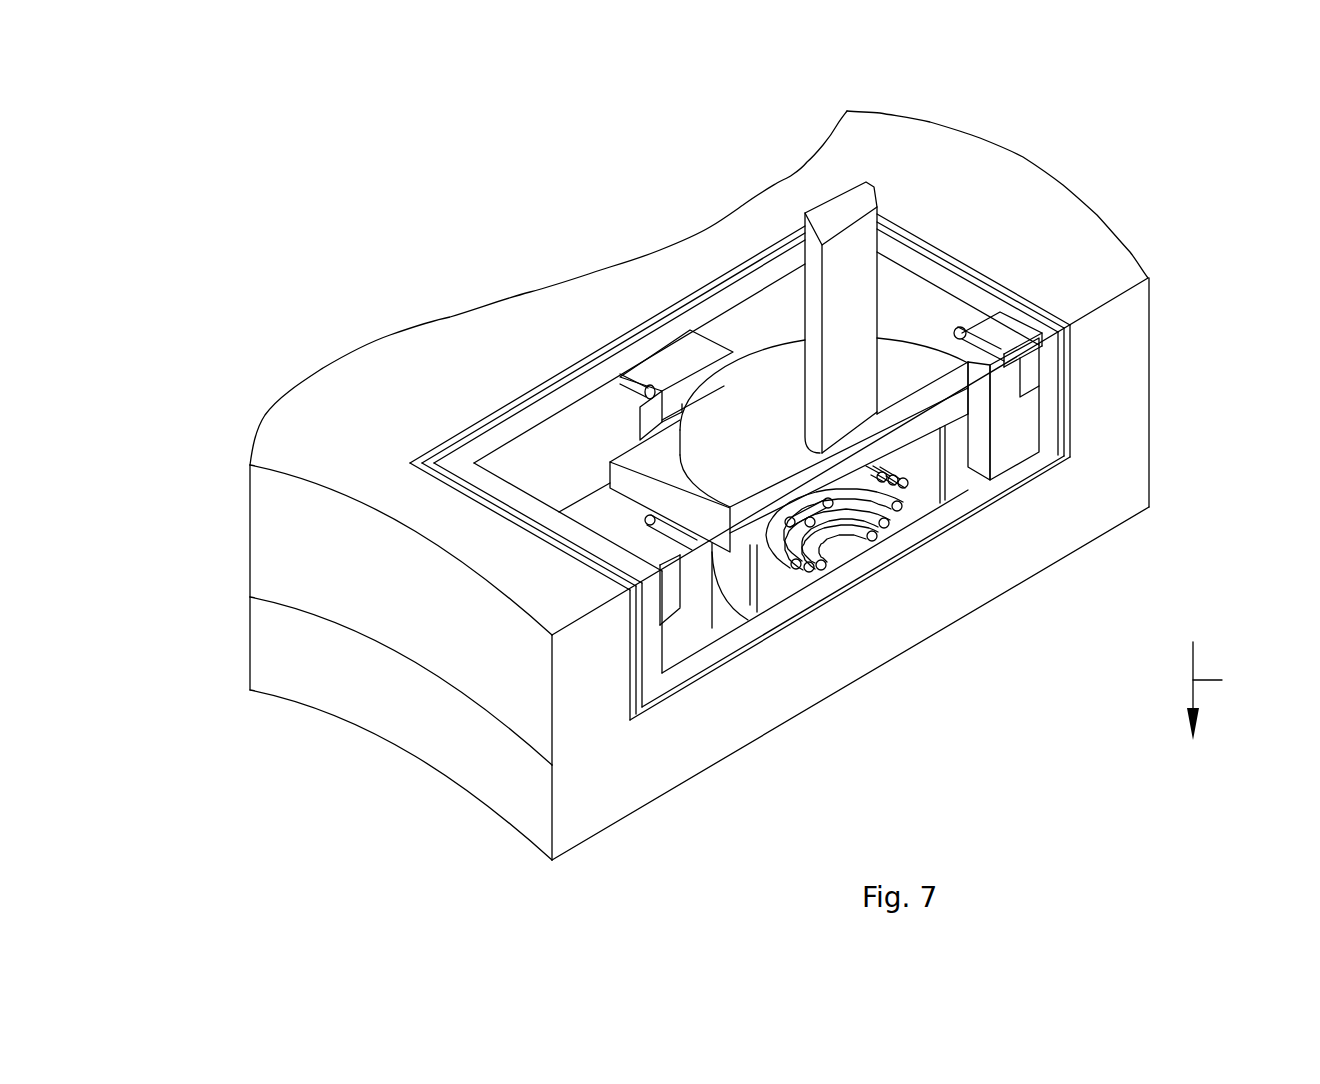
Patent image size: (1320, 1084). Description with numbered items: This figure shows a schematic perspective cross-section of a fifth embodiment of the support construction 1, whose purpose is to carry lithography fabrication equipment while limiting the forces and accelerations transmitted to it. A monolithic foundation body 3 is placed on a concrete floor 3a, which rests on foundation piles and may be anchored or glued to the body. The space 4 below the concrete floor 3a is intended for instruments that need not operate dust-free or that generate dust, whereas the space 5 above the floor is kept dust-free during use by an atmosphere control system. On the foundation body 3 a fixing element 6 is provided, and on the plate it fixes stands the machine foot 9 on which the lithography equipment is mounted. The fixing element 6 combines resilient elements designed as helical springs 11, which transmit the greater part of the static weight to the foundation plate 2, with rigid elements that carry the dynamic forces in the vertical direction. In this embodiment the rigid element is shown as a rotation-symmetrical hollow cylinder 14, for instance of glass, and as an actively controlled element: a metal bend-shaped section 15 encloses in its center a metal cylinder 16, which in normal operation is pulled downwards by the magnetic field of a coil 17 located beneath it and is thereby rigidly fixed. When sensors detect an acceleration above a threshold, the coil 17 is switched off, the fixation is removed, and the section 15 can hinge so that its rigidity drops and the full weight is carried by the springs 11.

The support construction 1 is at (696, 471).
The foundation plate 2 is at (722, 615).
The foundation body 3 is at (273, 537).
The concrete floor 3a is at (274, 645).
The space below the concrete floor 4 is at (361, 798).
The space above the concrete floor 5 is at (375, 305).
The fixing element 6 is at (740, 467).
The machine foot 9 is at (774, 372).
The helical springs 11 is at (830, 535).
The hollow cylinder 14 is at (928, 458).
The bend-shaped section 15 is at (1003, 338).
The metal cylinder 16 is at (963, 335).
The coil 17 is at (1012, 432).